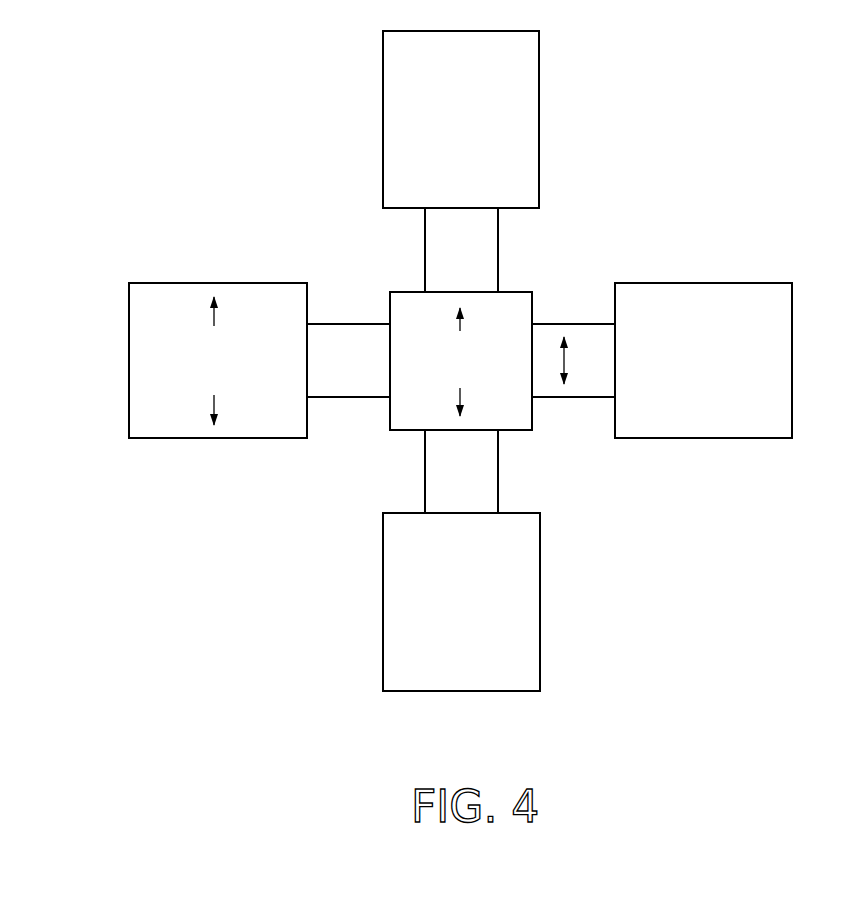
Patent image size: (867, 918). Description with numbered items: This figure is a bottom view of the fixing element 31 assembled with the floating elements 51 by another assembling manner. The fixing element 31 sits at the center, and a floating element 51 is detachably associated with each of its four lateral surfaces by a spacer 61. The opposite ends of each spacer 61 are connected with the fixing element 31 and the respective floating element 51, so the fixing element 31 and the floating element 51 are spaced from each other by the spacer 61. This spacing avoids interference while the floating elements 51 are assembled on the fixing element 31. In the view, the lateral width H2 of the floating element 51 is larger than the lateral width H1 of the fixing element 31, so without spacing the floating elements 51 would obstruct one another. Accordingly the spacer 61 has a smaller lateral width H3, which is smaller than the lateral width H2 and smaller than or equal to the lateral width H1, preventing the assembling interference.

The fixing element 31 is at (510, 303).
The floating element 51 is at (539, 90).
The spacer 61 is at (426, 236).
The lateral width of the fixing element H1 is at (469, 362).
The lateral width of the floating element H2 is at (220, 361).
The lateral width of the spacer H3 is at (565, 360).